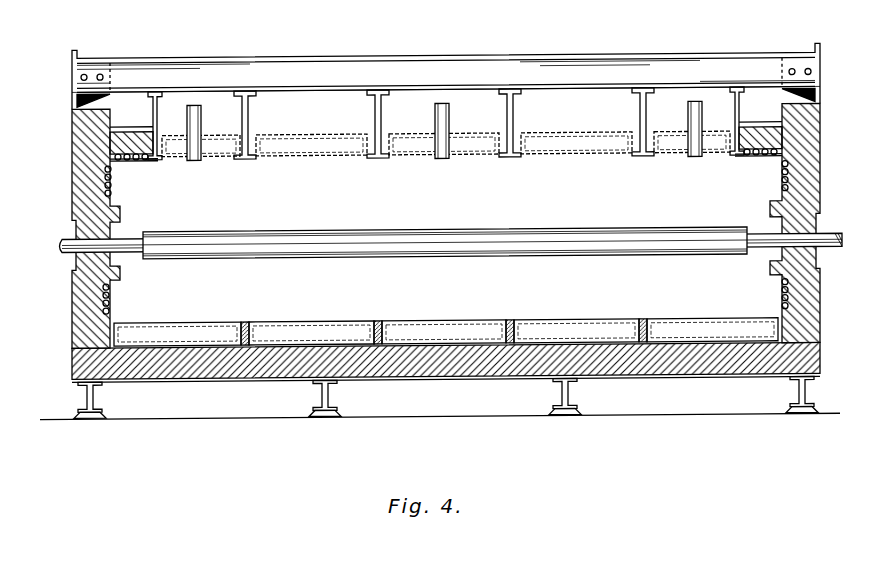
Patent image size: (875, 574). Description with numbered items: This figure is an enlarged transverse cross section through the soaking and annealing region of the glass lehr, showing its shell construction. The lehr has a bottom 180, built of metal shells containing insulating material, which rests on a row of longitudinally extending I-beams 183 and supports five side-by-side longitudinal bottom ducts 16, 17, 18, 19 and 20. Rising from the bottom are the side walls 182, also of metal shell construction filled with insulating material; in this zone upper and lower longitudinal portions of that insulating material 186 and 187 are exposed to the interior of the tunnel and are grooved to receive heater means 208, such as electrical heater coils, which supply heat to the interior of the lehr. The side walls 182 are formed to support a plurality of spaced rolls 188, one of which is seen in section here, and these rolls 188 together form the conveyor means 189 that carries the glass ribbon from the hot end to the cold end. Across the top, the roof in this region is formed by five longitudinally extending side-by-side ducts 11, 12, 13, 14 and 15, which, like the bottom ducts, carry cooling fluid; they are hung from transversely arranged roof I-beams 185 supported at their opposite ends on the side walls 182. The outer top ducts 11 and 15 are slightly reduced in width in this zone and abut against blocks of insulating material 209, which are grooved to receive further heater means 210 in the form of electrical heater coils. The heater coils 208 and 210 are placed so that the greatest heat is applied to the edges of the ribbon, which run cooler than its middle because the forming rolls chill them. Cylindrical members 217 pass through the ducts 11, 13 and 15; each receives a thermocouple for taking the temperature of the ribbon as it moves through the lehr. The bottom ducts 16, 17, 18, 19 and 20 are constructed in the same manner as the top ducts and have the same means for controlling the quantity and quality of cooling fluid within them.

The roof I-beams 185 is at (592, 62).
The side walls 182 is at (70, 204).
The blocks of insulating material 209 is at (140, 135).
The heater means 210 is at (150, 163).
The heater means 208 is at (112, 172).
The upper insulating material portion 186 is at (112, 192).
The lower insulating material portion 187 is at (112, 300).
The duct 11 is at (228, 140).
The duct 12 is at (297, 140).
The duct 13 is at (484, 140).
The duct 14 is at (590, 140).
The duct 15 is at (665, 140).
The cylindrical members 217 is at (442, 163).
The conveyor means 189 is at (578, 234).
The rolls 188 is at (428, 234).
The bottom 180 is at (716, 372).
The duct 16 is at (190, 325).
The duct 17 is at (306, 325).
The duct 18 is at (422, 325).
The duct 19 is at (572, 325).
The duct 20 is at (724, 325).
The I-beams 183 is at (330, 398).